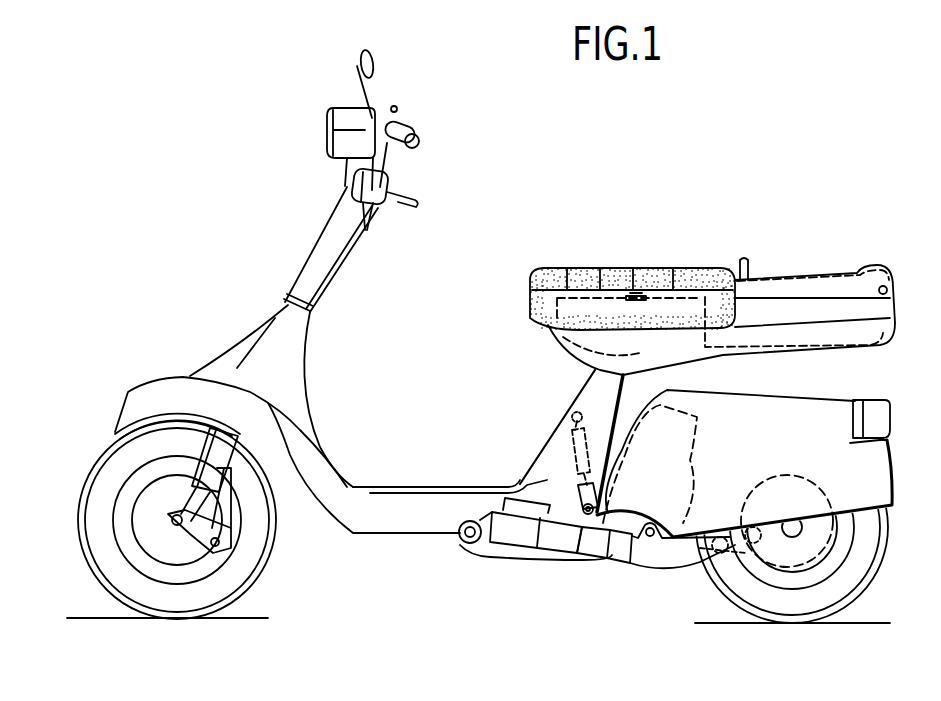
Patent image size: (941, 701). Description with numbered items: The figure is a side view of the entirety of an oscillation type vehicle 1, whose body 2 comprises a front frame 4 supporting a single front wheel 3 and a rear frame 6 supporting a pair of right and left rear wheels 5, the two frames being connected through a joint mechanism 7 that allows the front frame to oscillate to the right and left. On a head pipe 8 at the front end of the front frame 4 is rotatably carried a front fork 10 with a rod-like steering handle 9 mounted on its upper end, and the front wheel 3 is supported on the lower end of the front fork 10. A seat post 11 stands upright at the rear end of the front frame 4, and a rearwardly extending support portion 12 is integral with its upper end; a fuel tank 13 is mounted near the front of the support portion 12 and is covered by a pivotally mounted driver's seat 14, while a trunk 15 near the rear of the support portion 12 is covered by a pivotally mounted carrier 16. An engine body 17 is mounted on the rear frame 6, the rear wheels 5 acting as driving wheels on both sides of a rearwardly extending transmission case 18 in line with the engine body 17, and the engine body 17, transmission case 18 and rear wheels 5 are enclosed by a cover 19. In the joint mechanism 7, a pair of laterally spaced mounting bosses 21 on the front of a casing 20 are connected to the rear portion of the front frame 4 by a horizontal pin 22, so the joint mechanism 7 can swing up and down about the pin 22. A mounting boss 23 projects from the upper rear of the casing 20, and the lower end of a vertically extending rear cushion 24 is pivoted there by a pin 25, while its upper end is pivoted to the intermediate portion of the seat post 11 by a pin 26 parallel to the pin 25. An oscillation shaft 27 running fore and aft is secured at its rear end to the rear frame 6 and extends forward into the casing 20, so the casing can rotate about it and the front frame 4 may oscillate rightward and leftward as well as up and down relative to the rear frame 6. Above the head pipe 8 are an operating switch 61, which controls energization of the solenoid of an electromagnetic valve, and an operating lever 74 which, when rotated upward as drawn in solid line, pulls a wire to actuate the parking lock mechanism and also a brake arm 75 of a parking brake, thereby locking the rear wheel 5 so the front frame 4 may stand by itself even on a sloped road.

The oscillation type vehicle 1 is at (673, 226).
The body 2 is at (600, 583).
The front wheel 3 is at (82, 485).
The front frame 4 is at (447, 538).
The rear wheel 5 is at (868, 592).
The rear frame 6 is at (627, 568).
The joint mechanism 7 is at (560, 508).
The head pipe 8 is at (280, 311).
The steering handle 9 is at (404, 125).
The front fork 10 is at (200, 428).
The seat post 11 is at (583, 385).
The support portion 12 is at (798, 352).
The fuel tank 13 is at (530, 300).
The driver's seat 14 is at (617, 268).
The trunk 15 is at (808, 279).
The carrier 16 is at (771, 277).
The engine body 17 is at (680, 410).
The transmission case 18 is at (880, 550).
The cover 19 is at (740, 407).
The casing 20 is at (500, 512).
The mounting boss 21 is at (482, 518).
The pin 22 is at (462, 527).
The mounting boss 23 is at (610, 509).
The rear cushion 24 is at (590, 447).
The pin 25 is at (580, 500).
The pin 26 is at (568, 414).
The oscillation shaft 27 is at (628, 548).
The operating switch 61 is at (396, 106).
The operating lever 74 is at (405, 197).
The brake arm 75 is at (756, 553).